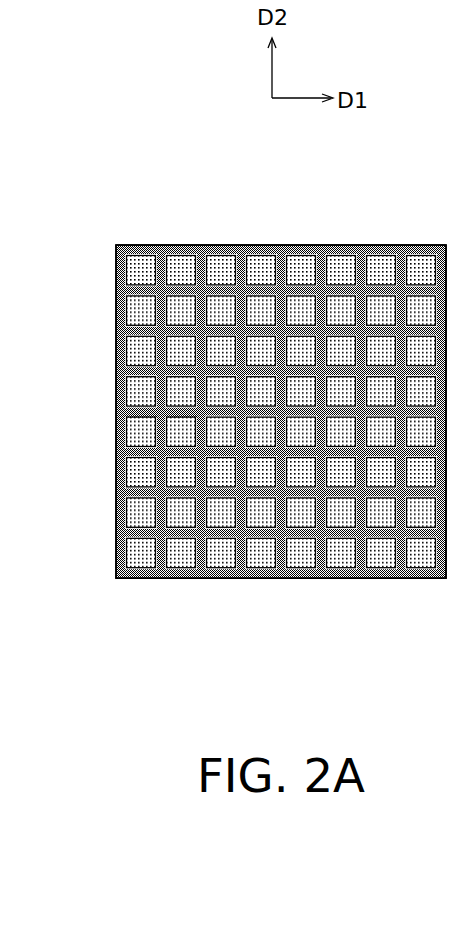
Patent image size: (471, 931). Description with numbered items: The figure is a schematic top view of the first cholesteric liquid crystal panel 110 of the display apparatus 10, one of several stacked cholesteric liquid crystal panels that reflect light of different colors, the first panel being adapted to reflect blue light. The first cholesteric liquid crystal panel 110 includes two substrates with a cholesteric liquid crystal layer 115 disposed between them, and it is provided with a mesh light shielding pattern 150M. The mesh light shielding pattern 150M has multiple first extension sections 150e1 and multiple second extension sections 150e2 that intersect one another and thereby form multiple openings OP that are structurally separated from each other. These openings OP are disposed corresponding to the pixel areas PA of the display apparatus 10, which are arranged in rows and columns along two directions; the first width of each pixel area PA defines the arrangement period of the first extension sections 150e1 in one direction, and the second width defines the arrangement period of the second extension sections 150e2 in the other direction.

The first cholesteric liquid crystal panel 110 is at (158, 588).
The display apparatus 10 is at (261, 460).
The mesh light shielding pattern 150M is at (246, 252).
The pixel area PA is at (187, 255).
The cholesteric liquid crystal layer 115 is at (344, 254).
The opening OP is at (417, 265).
The second extension section 150e2 is at (137, 347).
The first extension section 150e1 is at (163, 428).